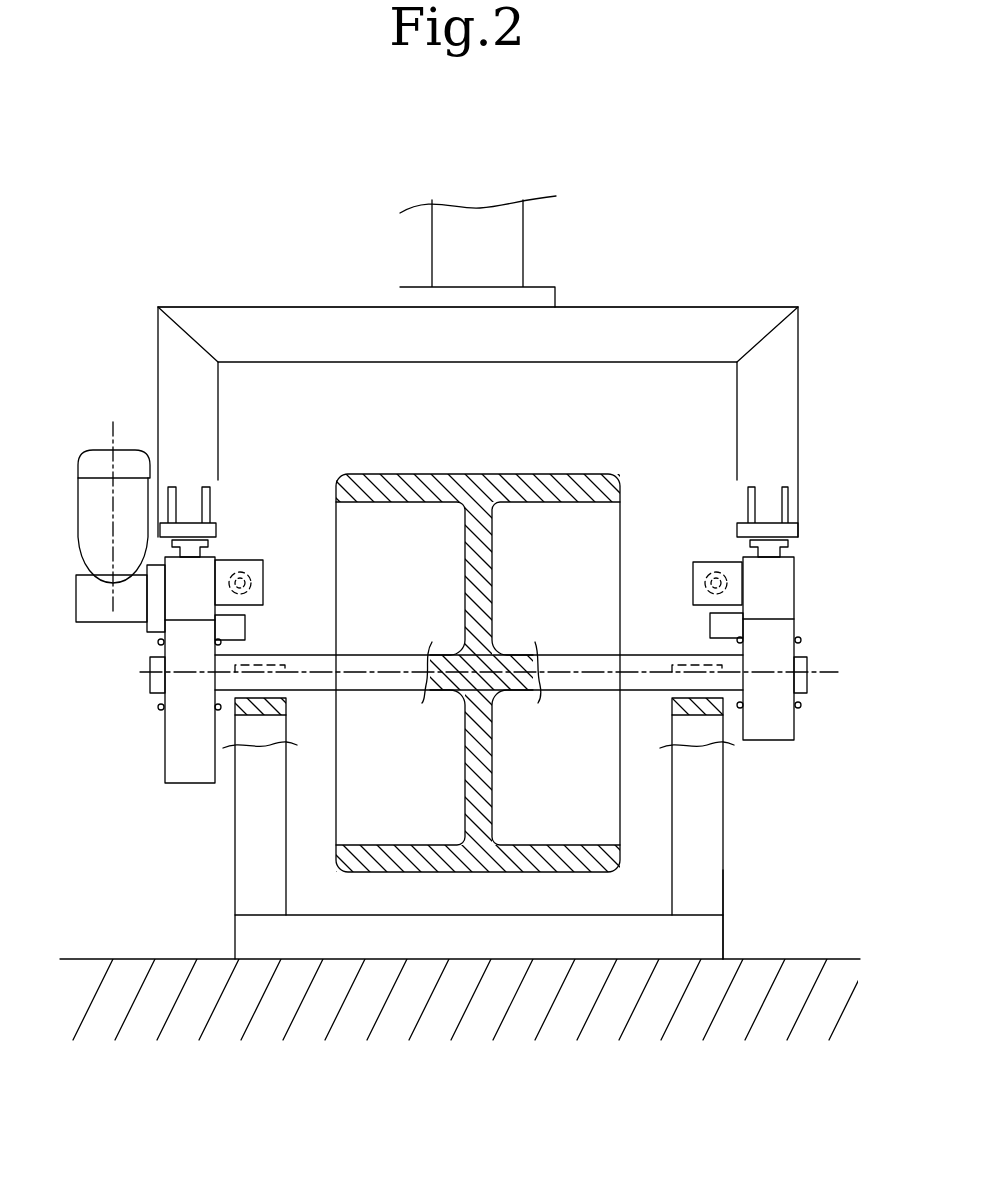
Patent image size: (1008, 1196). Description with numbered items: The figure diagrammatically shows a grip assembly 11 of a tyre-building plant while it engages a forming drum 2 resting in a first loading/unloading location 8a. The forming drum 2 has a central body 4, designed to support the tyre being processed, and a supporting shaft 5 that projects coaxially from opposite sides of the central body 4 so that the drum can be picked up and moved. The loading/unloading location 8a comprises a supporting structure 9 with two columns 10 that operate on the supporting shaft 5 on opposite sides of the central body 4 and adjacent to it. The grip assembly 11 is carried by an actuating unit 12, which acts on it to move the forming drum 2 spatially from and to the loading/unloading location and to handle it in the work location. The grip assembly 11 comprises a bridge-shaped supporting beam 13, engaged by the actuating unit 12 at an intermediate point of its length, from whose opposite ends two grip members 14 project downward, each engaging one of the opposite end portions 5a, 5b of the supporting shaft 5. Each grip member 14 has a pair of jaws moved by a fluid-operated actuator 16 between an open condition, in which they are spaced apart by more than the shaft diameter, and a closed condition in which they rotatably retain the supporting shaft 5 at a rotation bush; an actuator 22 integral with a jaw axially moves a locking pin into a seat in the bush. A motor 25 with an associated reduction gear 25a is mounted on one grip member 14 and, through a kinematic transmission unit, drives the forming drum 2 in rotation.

The forming drum 2 is at (504, 632).
The central body 4 is at (566, 477).
The supporting shaft 5 is at (473, 647).
The end portion of the supporting shaft 5a is at (225, 682).
The end portion of the supporting shaft 5b is at (735, 682).
The first loading/unloading location 8a is at (726, 882).
The supporting structure 9 is at (350, 937).
The column 10 is at (258, 840).
The grip assembly 11 is at (240, 302).
The actuating unit 12 is at (517, 232).
The bridge-shaped supporting beam 13 is at (705, 317).
The grip member 14 is at (157, 753).
The fluid-operated actuator 16 is at (253, 565).
The actuator 22 is at (237, 629).
The motor 25 is at (97, 462).
The reduction gear 25a is at (100, 603).